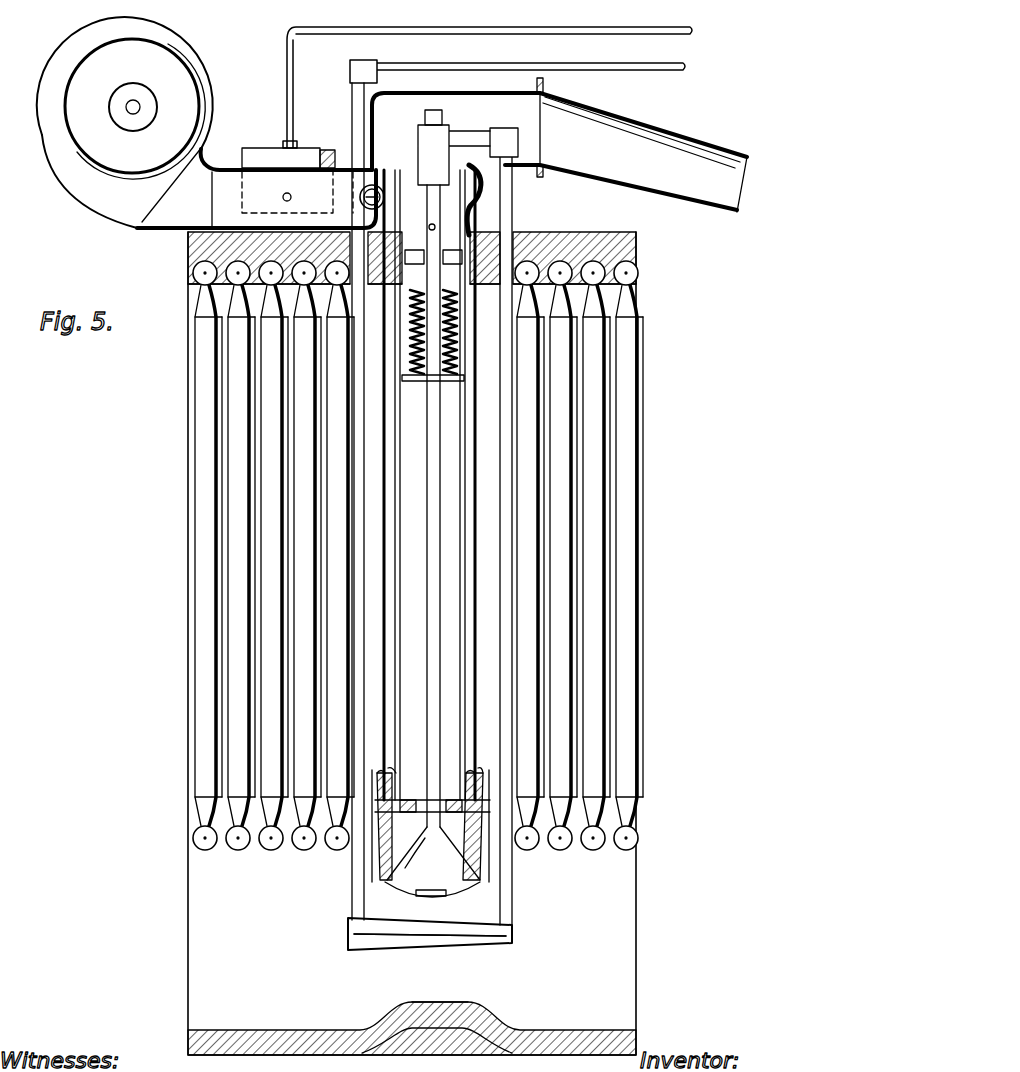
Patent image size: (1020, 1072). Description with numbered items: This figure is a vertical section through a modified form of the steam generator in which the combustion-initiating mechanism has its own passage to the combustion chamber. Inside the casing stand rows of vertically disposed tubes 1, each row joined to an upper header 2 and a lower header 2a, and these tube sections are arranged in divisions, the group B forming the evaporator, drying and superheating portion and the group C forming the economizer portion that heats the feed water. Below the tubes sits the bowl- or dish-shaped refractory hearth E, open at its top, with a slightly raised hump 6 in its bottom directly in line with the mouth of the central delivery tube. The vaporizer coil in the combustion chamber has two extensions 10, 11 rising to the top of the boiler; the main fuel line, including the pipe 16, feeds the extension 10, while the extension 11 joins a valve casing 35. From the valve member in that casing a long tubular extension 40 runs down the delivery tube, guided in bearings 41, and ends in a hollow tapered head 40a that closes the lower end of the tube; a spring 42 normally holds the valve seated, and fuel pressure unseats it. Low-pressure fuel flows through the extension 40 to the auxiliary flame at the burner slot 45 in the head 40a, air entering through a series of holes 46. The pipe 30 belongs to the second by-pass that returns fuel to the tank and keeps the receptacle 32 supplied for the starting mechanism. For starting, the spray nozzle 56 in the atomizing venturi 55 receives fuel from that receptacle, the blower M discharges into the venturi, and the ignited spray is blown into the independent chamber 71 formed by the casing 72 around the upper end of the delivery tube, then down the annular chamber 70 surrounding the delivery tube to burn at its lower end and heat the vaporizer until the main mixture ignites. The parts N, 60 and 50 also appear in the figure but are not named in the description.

The pulley N is at (70, 50).
The blower M is at (103, 200).
The chamber or receptacle 32 is at (276, 165).
The atomizing venturi 55 is at (310, 176).
The spray nozzle 56 is at (283, 196).
The shaft bearing 60 is at (358, 196).
The pipe 30 is at (472, 28).
The pipe 16 is at (590, 70).
The valve casing 35 is at (446, 136).
The vaporizer extension 11 is at (520, 160).
The discharge conduit 50 is at (652, 128).
The casing 72 is at (512, 174).
The independent chamber 71 is at (486, 192).
The holes 46 is at (436, 227).
The upper header 2 is at (210, 276).
The lower header 2a is at (205, 842).
The bearings 41 is at (385, 302).
The vaporizer extension 10 is at (357, 340).
The spring 42 is at (458, 365).
The annular chamber 70 is at (388, 506).
The tubular extension 40 is at (432, 558).
The tapered head 40a is at (400, 880).
The burner opening or slot 45 is at (440, 905).
The tube group B is at (260, 665).
The tubes 1 is at (588, 717).
The tube group C is at (412, 946).
The hump 6 is at (436, 1002).
The bowl-shaped hearth E is at (604, 1003).